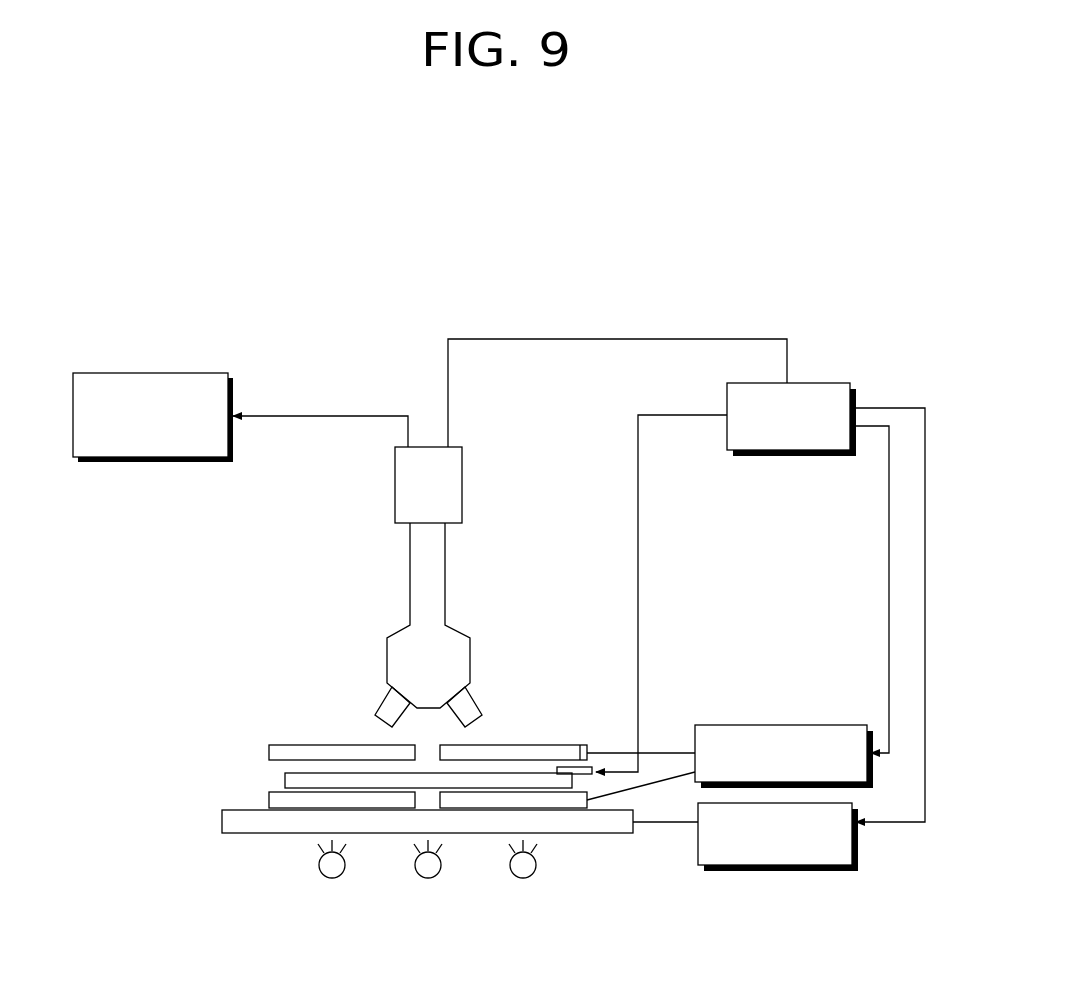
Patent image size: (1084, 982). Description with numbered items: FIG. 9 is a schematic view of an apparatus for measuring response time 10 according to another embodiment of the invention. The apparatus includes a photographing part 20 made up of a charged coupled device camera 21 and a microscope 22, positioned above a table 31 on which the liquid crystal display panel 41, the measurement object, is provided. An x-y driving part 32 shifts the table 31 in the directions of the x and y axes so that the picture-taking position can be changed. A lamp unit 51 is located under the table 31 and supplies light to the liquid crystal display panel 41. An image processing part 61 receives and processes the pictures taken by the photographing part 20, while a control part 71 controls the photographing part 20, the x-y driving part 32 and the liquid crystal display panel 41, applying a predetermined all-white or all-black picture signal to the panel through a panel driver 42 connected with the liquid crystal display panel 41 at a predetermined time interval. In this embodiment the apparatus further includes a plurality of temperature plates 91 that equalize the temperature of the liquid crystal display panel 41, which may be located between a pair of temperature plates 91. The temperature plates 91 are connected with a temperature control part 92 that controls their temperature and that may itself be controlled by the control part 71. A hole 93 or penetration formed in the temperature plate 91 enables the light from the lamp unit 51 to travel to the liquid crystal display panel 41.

The apparatus for measuring response time 10 is at (620, 271).
The photographing part 20 is at (120, 507).
The charged coupled device (CCD) camera 21 is at (395, 515).
The microscope 22 is at (391, 702).
The table 31 is at (222, 822).
The x-y driving part 32 is at (778, 868).
The liquid crystal display panel 41 is at (285, 780).
The panel driver 42 is at (581, 745).
The lamp unit 51 is at (318, 858).
The image processing part 61 is at (160, 373).
The control part 71 is at (834, 383).
The temperature plates 91 is at (270, 750).
The temperature control part 92 is at (786, 682).
The hole 93 is at (431, 810).